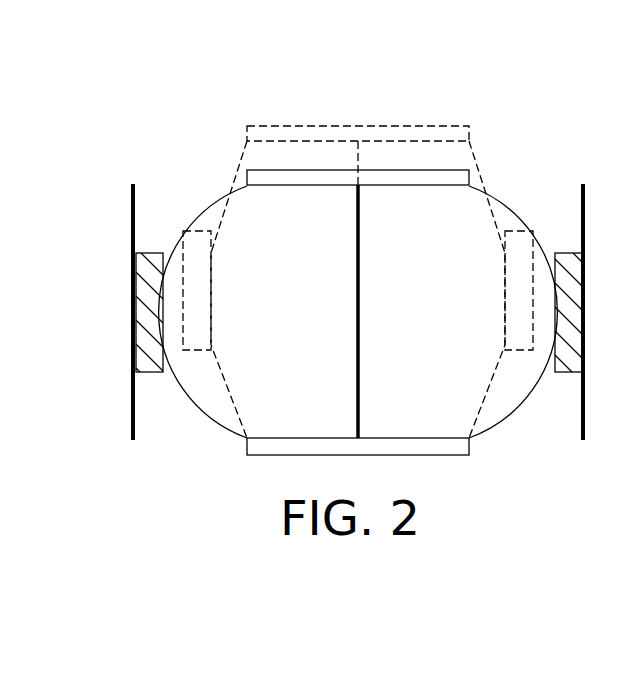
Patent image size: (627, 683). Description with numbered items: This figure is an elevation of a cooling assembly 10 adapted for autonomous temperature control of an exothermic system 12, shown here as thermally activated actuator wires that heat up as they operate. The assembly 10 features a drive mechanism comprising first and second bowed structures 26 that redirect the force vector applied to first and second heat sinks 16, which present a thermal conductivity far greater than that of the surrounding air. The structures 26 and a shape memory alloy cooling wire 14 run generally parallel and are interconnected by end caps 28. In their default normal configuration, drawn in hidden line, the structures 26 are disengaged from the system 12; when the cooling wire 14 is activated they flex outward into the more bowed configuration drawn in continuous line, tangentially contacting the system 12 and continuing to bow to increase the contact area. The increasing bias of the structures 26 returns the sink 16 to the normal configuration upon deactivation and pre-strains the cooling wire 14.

The cooling assembly 10 is at (422, 68).
The exothermic system 12 is at (583, 410).
The active material element 14 is at (358, 287).
The heat sink 16 is at (157, 253).
The bowed structure 26 is at (218, 425).
The end cap 28 is at (470, 170).